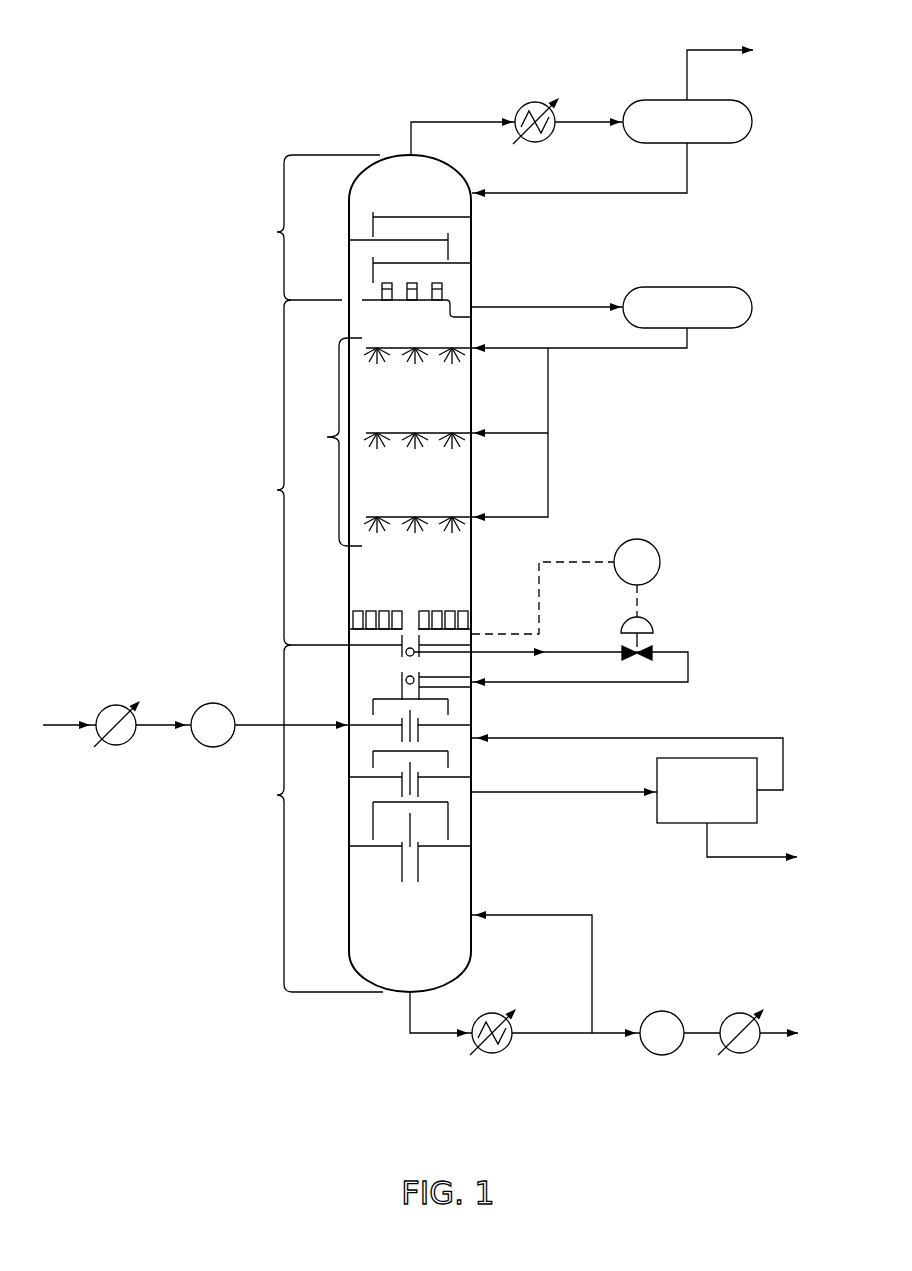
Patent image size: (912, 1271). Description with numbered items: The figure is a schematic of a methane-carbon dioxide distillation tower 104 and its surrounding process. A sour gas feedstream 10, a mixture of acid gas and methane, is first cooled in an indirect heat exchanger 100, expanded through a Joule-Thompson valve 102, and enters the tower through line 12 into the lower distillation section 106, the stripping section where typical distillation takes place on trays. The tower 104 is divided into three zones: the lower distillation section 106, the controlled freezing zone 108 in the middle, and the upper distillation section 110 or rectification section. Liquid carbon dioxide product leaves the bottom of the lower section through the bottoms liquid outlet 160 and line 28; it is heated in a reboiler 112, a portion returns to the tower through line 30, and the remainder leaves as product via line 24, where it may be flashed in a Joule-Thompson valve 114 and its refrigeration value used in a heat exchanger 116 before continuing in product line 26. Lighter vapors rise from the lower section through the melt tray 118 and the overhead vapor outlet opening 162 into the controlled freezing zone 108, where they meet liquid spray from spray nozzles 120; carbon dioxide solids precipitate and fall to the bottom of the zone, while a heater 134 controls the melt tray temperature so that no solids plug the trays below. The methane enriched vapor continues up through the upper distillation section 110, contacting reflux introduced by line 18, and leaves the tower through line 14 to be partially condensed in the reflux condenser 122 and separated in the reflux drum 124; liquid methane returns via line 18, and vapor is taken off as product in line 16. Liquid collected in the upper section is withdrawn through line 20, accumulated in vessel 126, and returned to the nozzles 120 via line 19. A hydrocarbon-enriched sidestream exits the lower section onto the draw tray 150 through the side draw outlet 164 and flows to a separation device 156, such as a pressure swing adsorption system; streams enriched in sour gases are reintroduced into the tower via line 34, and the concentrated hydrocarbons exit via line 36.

The sour gas feedstream 10 is at (56, 723).
The line 12 is at (260, 720).
The line 14 is at (458, 120).
The line 16 is at (716, 50).
The line 18 is at (582, 193).
The line 19 is at (610, 352).
The line 20 is at (540, 307).
The line 24 is at (605, 1035).
The product line 26 is at (770, 1032).
The line 28 is at (425, 1035).
The line 30 is at (545, 915).
The line 34 is at (748, 738).
The line 36 is at (748, 860).
The indirect heat exchanger 100 is at (122, 748).
The Joule-Thompson valve 102 is at (212, 702).
The distillation tower 104 is at (200, 60).
The lower distillation section 106 is at (277, 795).
The controlled freezing zone 108 is at (277, 490).
The upper distillation section 110 is at (277, 232).
The reboiler 112 is at (493, 1055).
The Joule-Thompson valve 114 is at (662, 1011).
The heat exchanger 116 is at (738, 1055).
The melt tray 118 is at (475, 628).
The spray nozzles 120 is at (380, 442).
The reflux condenser 122 is at (536, 100).
The reflux drum 124 is at (652, 100).
The vessel 126 is at (716, 287).
The heater 134 is at (465, 650).
The draw tray 150 is at (548, 790).
The separation device 156 is at (758, 807).
The bottoms liquid outlet 160 is at (408, 994).
The overhead vapor outlet opening 162 is at (411, 621).
The side draw outlet 164 is at (472, 823).